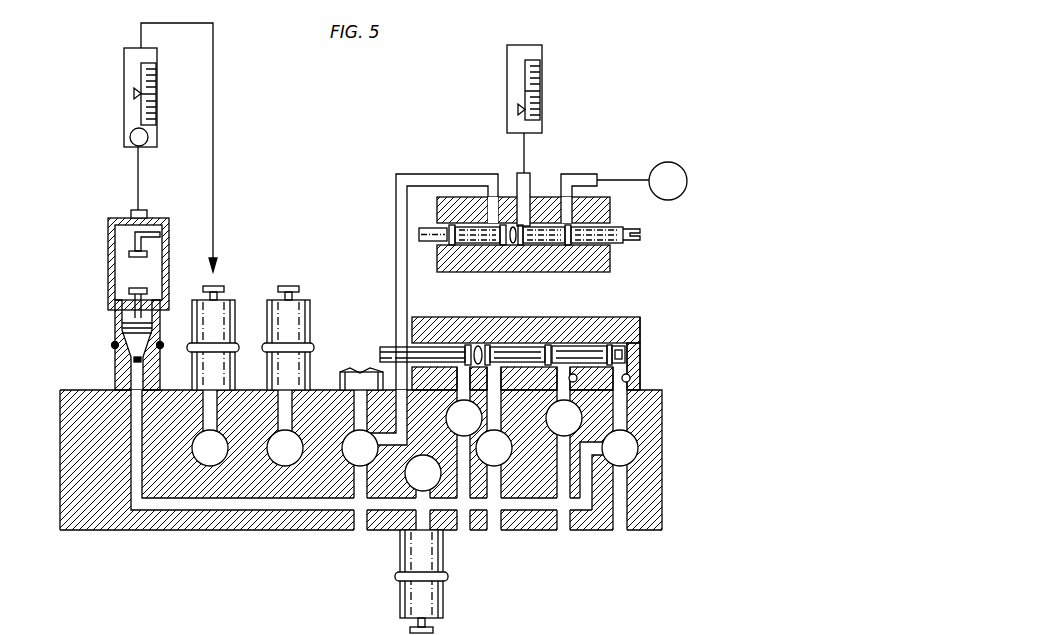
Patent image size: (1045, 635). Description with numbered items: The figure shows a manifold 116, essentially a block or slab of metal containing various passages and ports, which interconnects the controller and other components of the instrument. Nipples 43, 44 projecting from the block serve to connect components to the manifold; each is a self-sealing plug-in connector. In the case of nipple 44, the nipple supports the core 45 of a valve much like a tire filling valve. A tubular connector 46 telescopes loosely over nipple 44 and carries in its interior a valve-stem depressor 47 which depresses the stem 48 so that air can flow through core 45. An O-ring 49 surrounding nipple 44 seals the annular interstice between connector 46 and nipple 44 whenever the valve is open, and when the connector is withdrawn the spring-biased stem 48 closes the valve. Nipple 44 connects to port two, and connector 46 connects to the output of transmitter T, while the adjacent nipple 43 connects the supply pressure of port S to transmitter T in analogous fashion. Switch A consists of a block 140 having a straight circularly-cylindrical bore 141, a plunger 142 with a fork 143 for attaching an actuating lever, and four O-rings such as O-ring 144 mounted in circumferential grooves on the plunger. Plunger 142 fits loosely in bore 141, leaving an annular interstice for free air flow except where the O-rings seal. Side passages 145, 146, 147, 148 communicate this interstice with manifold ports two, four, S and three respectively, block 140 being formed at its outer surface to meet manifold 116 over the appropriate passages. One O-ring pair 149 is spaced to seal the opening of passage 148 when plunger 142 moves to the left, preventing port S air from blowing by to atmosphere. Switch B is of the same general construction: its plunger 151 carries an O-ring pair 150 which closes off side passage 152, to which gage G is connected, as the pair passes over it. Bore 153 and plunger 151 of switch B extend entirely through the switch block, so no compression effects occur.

The transmitter T is at (124, 94).
The gage G is at (507, 84).
The switch B is at (616, 205).
The switch A is at (544, 314).
The nipple 43 is at (225, 300).
The nipple 44 is at (115, 319).
The core 45 is at (133, 338).
The tubular connector 46 is at (108, 265).
The valve-stem depressor 47 is at (135, 236).
The stem 48 is at (140, 289).
The O-ring 49 is at (113, 347).
The manifold 116 is at (60, 462).
The block 140 is at (638, 317).
The bore 141 is at (593, 346).
The plunger 142 is at (389, 347).
The fork 143 is at (383, 357).
The O-ring 144 is at (640, 336).
The side passage 145 is at (640, 377).
The side passage 146 is at (576, 382).
The side passage 147 is at (500, 383).
The side passage 148 is at (460, 372).
The O-ring pair 149 is at (481, 350).
The O-ring pair 150 is at (511, 181).
The plunger 151 is at (612, 231).
The side passage 152 is at (532, 181).
The bore 153 is at (605, 248).